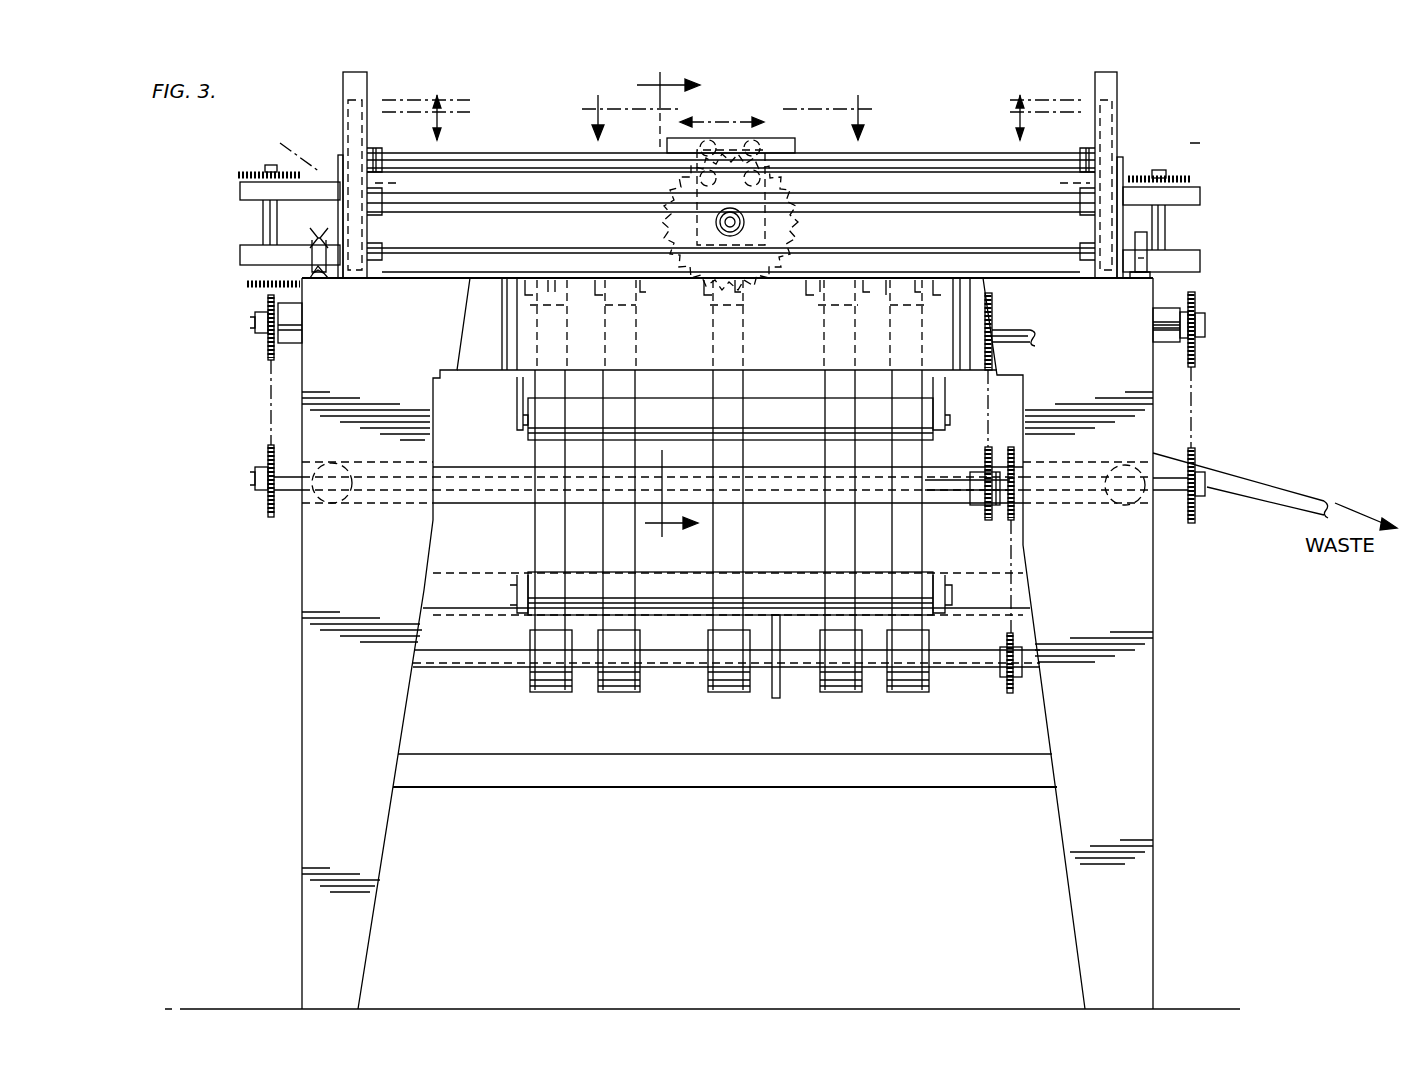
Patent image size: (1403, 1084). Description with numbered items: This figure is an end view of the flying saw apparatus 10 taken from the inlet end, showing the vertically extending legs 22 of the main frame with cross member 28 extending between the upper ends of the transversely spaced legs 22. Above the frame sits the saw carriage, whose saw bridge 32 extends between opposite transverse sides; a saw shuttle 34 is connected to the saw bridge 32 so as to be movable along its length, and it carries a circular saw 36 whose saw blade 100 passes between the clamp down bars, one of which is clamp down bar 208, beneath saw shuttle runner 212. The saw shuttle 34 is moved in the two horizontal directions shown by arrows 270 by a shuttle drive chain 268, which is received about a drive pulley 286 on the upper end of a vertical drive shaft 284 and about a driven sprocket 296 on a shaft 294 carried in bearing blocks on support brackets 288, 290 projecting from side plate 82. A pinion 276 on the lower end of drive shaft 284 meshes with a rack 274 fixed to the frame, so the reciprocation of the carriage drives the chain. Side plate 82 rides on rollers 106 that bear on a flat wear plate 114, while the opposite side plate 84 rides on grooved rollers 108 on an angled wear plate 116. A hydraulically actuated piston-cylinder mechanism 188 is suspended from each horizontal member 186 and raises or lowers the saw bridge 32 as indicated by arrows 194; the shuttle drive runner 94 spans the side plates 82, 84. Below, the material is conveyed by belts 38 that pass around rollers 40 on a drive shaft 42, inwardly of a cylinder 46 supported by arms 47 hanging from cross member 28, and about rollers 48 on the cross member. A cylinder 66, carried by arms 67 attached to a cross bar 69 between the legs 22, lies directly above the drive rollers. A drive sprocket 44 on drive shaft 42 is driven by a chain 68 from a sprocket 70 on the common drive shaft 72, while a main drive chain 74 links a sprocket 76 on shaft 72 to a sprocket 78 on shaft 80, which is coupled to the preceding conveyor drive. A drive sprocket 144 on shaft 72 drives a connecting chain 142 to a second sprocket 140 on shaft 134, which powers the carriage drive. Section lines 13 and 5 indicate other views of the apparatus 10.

The flying saw apparatus 10 is at (1294, 110).
The section line 13 is at (727, 120).
The section line 5 is at (673, 307).
The legs 22 is at (300, 755).
The cross member 28 is at (478, 355).
The saw bridge 32 is at (942, 102).
The saw shuttle 34 is at (792, 135).
The circular saw 36 is at (864, 230).
The belts 38 is at (552, 690).
The rollers 40 is at (525, 692).
The drive shaft 42 is at (484, 650).
The drive sprocket 44 is at (1005, 695).
The cylinder 46 is at (796, 427).
The arms 47 is at (517, 407).
The rollers 48 is at (598, 308).
The cylinder 66 is at (796, 604).
The arms 67 is at (517, 575).
The chain 68 is at (1015, 625).
The cross bar 69 is at (482, 602).
The sprocket 70 is at (1005, 522).
The common drive shaft 72 is at (940, 488).
The main drive chain 74 is at (980, 425).
The sprocket 76 is at (990, 450).
The sprocket 78 is at (994, 310).
The shaft 80 is at (1015, 340).
The side plate 82 is at (1124, 158).
The side plate 84 is at (336, 145).
The shuttle drive runner 94 is at (928, 215).
The saw blade 100 is at (798, 228).
The rollers 106 is at (1155, 262).
The rollers 108 is at (316, 240).
The flat wear plate 114 is at (1148, 278).
The angled wear plate 116 is at (324, 278).
The shaft 134 is at (1170, 340).
The second sprocket 140 is at (264, 358).
The connecting chain 142 is at (265, 430).
The drive sprocket 144 is at (265, 512).
The horizontal member 186 is at (368, 86).
The piston-cylinder mechanism 188 is at (732, 184).
The arrows 194 is at (1015, 130).
The clamp down bar 208 is at (990, 262).
The saw shuttle runner 212 is at (948, 172).
The shuttle drive chain 268 is at (1192, 150).
The arrows 270 is at (732, 115).
The rack 274 is at (302, 298).
The pinion 276 is at (240, 290).
The drive shaft 284 is at (240, 214).
The drive sprocket or pulley 286 is at (240, 170).
The support bracket 288 is at (1205, 262).
The support bracket 290 is at (1200, 198).
The shaft 294 is at (1168, 225).
The driven sprocket 296 is at (1192, 178).